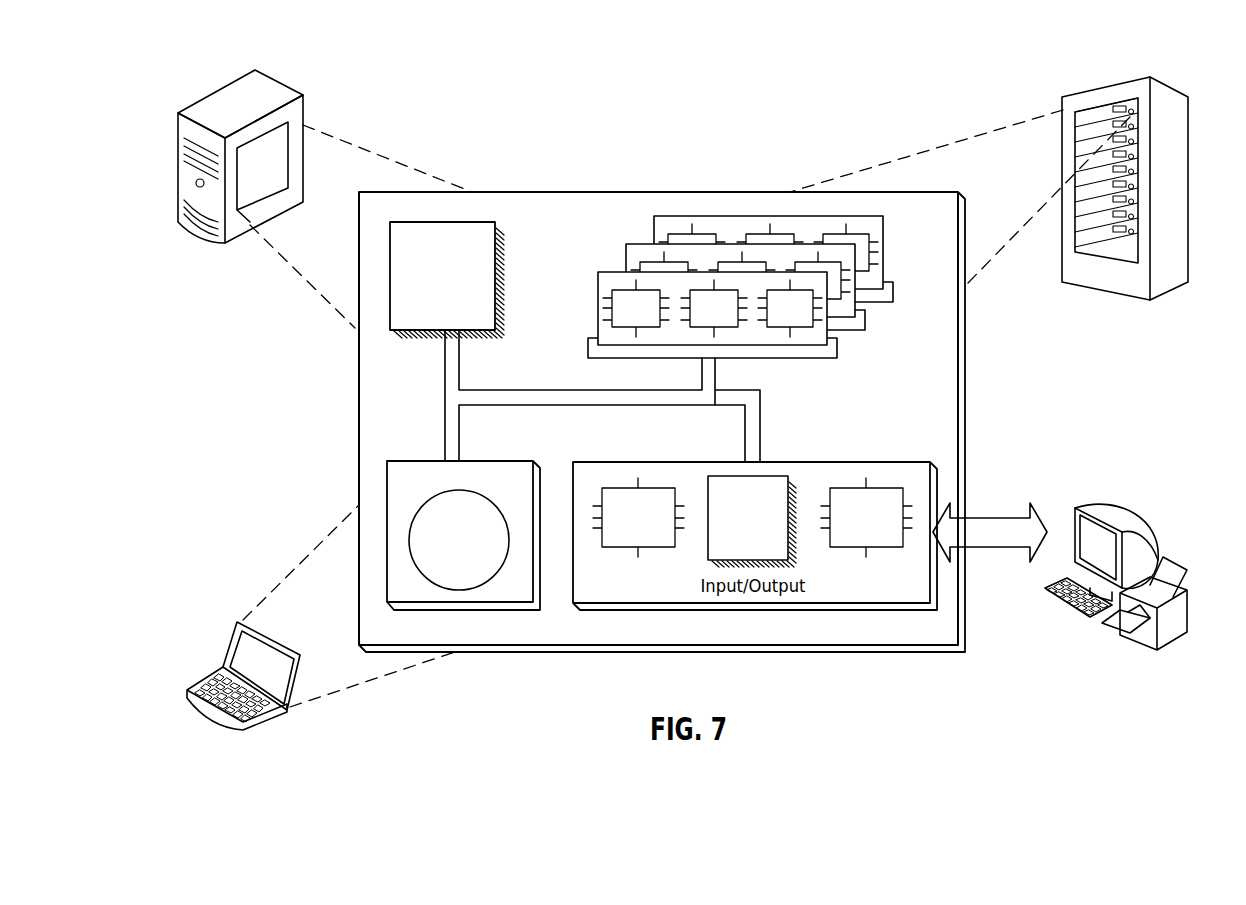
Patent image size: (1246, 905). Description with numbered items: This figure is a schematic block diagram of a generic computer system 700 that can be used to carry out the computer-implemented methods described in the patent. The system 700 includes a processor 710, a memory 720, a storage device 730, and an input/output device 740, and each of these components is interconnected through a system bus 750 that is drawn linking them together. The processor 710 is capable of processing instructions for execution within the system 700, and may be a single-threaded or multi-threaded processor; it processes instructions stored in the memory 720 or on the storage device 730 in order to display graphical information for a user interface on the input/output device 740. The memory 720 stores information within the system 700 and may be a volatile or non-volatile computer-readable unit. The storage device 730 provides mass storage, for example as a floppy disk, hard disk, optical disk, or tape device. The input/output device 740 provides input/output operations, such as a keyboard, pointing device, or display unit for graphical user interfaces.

The computer system 700 is at (515, 93).
The processor 710 is at (481, 320).
The memory 720 is at (889, 326).
The storage device 730 is at (523, 597).
The input/output device 740 is at (1078, 509).
The system bus 750 is at (598, 406).